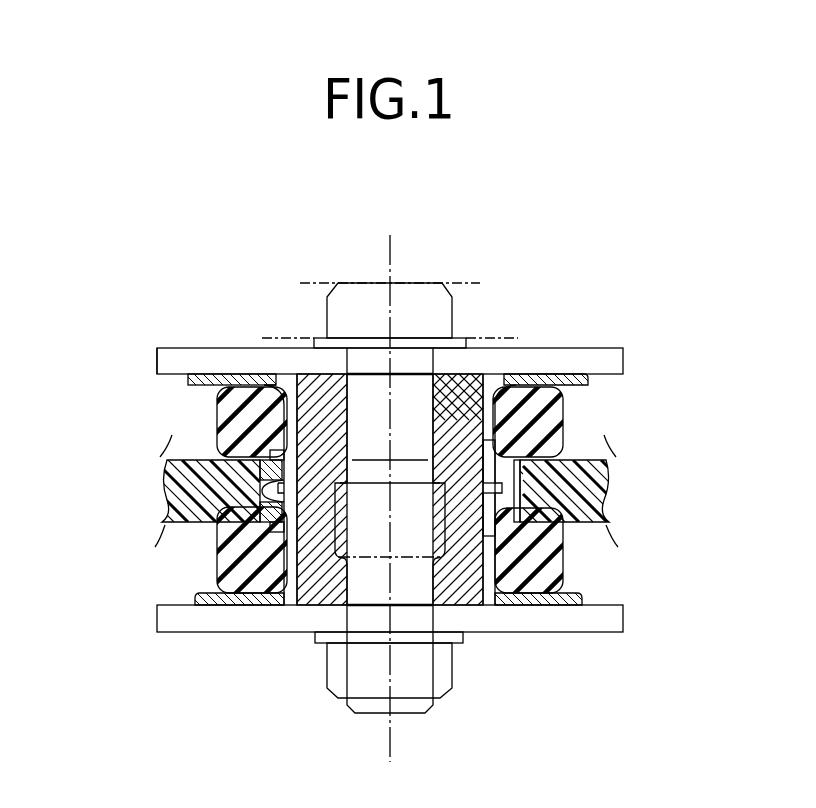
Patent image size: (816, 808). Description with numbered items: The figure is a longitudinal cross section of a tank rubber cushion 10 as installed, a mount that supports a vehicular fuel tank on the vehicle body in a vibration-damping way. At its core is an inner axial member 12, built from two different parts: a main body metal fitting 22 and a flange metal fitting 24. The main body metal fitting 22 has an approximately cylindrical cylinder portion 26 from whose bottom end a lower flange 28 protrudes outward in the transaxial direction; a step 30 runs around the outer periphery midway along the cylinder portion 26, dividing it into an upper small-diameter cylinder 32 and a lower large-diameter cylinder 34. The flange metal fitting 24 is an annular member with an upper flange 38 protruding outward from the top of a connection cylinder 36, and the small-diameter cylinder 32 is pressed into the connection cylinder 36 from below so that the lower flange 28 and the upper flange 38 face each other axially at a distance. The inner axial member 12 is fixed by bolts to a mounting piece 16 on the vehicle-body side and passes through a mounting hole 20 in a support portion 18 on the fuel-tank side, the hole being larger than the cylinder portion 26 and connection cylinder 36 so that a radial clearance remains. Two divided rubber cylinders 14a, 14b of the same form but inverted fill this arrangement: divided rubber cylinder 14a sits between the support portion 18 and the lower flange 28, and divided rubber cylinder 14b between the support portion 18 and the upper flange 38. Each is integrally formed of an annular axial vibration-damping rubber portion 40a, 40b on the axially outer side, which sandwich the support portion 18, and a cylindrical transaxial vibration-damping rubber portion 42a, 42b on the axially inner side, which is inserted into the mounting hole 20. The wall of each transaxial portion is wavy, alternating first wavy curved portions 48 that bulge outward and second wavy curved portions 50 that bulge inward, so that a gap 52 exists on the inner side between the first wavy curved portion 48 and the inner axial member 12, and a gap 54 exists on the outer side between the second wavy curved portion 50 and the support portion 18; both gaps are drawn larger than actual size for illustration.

The tank rubber cushion 10 is at (138, 372).
The inner axial member 12 is at (280, 285).
The divided rubber cylinder 14a is at (567, 577).
The divided rubber cylinder 14b is at (567, 405).
The mounting piece 16 is at (203, 358).
The support portion 18 is at (585, 503).
The mounting hole 20 is at (263, 503).
The main body metal fitting 22 is at (292, 380).
The flange metal fitting 24 is at (250, 370).
The cylinder portion 26 is at (355, 245).
The lower flange 28 is at (548, 605).
The step 30 is at (280, 483).
The small-diameter cylinder 32 is at (328, 413).
The large-diameter cylinder 34 is at (348, 493).
The connection cylinder 36 is at (435, 465).
The upper flange 38 is at (540, 378).
The axial vibration-damping rubber portion 40a is at (232, 566).
The axial vibration-damping rubber portion 40b is at (232, 410).
The transaxial vibration-damping rubber portion 42a is at (505, 508).
The transaxial vibration-damping rubber portion 42b is at (490, 468).
The first wavy curved portion 48 is at (278, 462).
The second wavy curved portion 50 is at (476, 454).
The gap 52 is at (281, 452).
The gap 54 is at (522, 473).